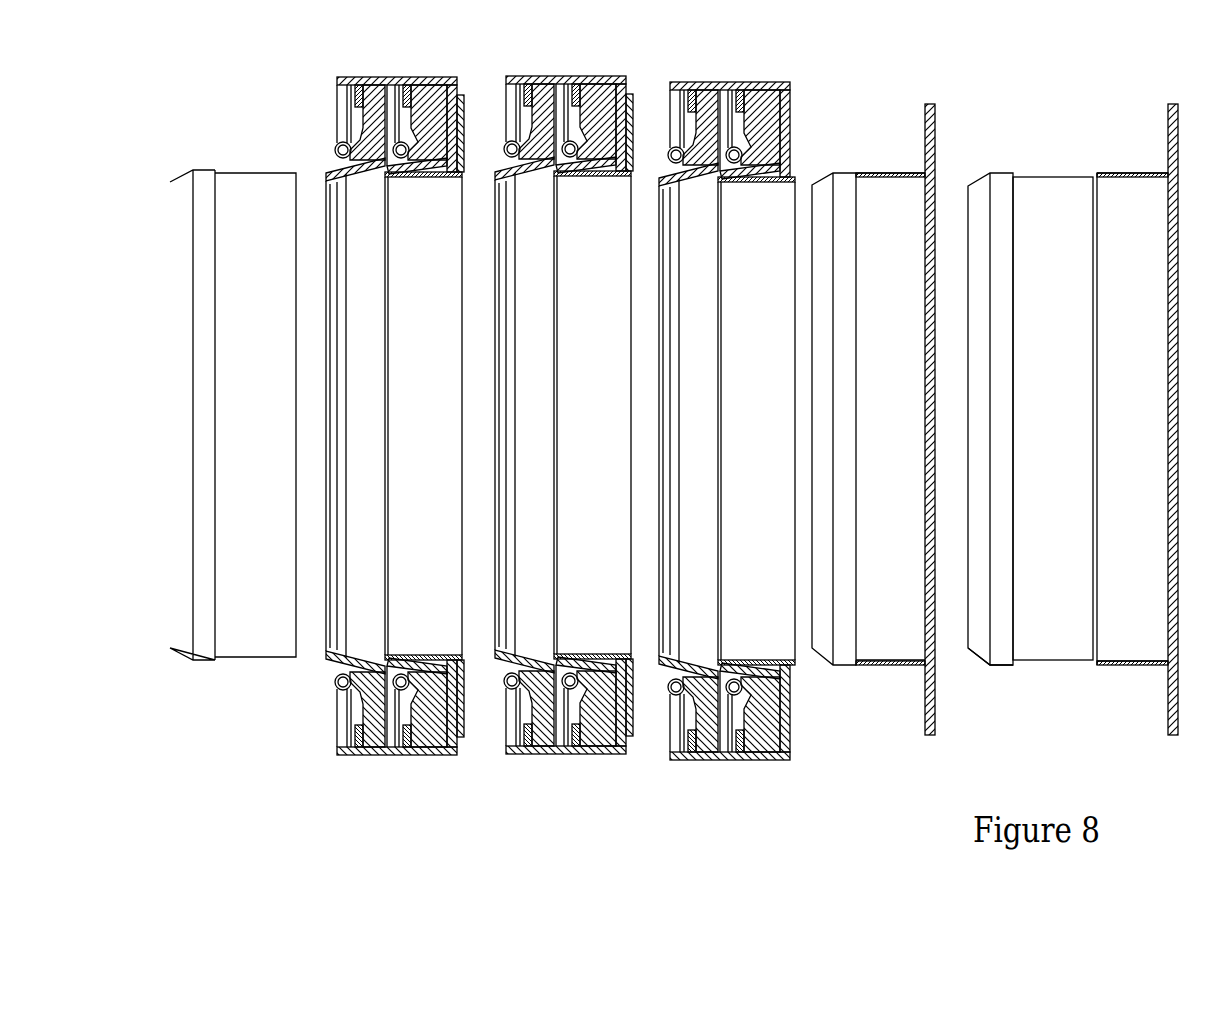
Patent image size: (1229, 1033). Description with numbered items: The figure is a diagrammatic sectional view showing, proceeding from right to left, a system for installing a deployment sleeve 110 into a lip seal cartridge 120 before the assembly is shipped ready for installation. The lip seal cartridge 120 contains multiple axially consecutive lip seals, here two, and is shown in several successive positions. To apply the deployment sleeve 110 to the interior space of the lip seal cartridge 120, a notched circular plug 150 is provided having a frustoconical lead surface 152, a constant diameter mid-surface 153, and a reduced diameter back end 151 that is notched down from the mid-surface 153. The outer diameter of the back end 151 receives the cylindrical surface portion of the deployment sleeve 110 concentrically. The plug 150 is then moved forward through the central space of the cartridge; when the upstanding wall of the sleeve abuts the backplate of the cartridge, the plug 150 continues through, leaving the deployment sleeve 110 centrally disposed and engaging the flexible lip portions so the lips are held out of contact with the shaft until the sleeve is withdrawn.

The deployment sleeve 110 is at (1170, 107).
The lip seal cartridge 120 is at (782, 126).
The notched circular plug 150 is at (1015, 416).
The reduced diameter back end 151 is at (1045, 176).
The frustoconical lead surface 152 is at (982, 174).
The constant diameter mid-surface 153 is at (1000, 667).